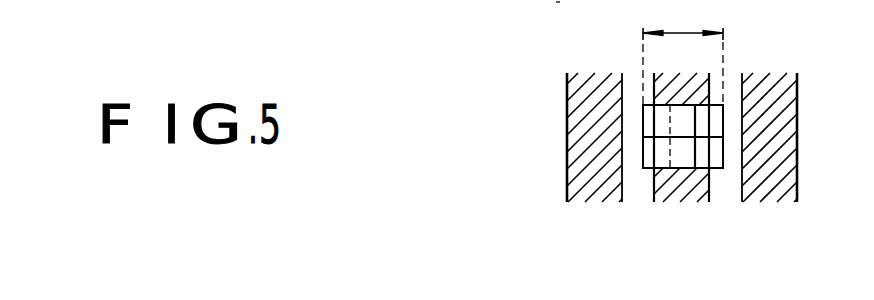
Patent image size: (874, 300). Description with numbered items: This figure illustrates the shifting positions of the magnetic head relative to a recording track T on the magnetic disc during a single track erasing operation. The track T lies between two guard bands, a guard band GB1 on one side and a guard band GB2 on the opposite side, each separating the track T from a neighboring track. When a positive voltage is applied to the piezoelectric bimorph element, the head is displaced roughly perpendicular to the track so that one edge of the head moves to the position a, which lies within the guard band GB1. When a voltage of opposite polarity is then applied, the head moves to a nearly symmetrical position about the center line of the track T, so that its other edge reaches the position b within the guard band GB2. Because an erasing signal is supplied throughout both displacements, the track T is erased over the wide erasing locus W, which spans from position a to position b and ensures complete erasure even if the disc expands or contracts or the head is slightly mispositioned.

The shifted head position a is at (645, 169).
The opposite shifted head position b is at (717, 169).
The guard band GB1 is at (651, 199).
The guard band GB2 is at (732, 199).
The recording track T is at (682, 199).
The erasing locus W is at (683, 20).